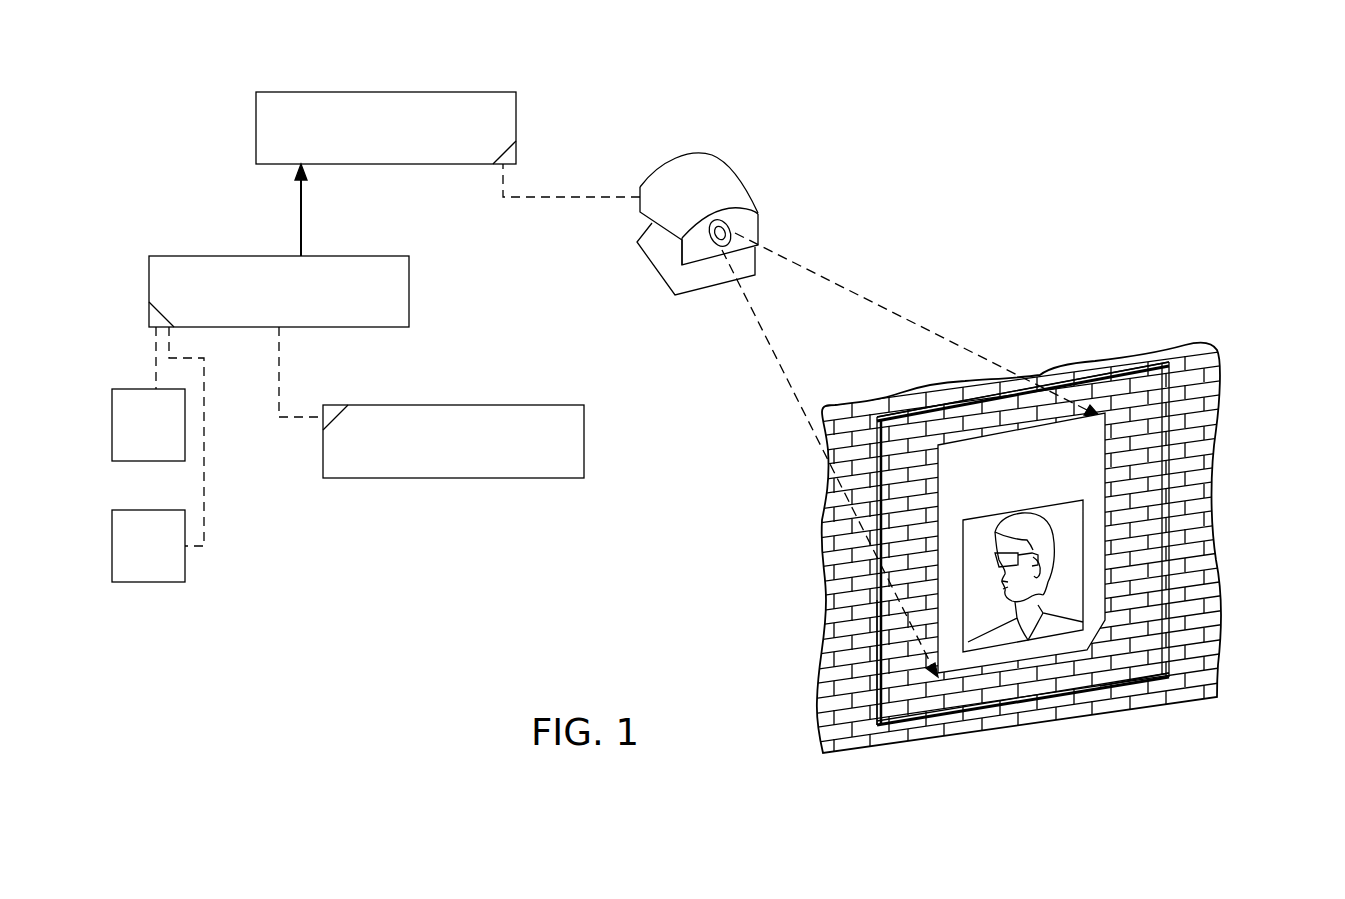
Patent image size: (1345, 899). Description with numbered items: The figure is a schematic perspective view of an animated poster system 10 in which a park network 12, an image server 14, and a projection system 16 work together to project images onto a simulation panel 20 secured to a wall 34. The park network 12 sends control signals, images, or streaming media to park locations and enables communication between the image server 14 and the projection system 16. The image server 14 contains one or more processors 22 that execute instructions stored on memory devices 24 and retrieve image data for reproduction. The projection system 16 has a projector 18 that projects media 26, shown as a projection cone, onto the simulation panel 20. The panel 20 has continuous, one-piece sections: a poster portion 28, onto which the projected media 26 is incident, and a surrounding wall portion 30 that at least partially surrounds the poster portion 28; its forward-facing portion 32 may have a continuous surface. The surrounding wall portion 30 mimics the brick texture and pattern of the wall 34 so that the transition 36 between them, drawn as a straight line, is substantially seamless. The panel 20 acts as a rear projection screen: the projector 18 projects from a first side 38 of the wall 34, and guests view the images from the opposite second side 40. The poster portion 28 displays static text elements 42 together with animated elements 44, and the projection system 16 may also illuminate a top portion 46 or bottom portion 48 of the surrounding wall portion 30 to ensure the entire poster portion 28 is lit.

The animated poster system 10 is at (836, 58).
The park network 12 is at (584, 447).
The image server 14 is at (149, 292).
The projection system 16 is at (256, 128).
The projector 18 is at (680, 153).
The simulation panel 20 is at (1057, 386).
The processor 22 is at (112, 426).
The memory device 24 is at (112, 548).
The projected media 26 is at (770, 348).
The poster portion 28 is at (1117, 574).
The surrounding wall portion 30 is at (898, 682).
The forward-facing portion 32 is at (1047, 550).
The wall 34 is at (1193, 455).
The transition 36 is at (876, 670).
The first side 38 is at (908, 293).
The second side 40 is at (1270, 482).
The text elements 42 is at (1085, 438).
The animated elements 44 is at (1088, 555).
The top portion 46 is at (877, 418).
The bottom portion 48 is at (1172, 648).